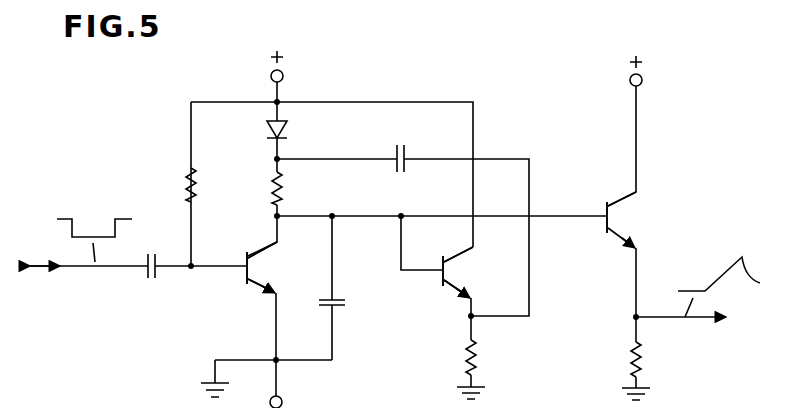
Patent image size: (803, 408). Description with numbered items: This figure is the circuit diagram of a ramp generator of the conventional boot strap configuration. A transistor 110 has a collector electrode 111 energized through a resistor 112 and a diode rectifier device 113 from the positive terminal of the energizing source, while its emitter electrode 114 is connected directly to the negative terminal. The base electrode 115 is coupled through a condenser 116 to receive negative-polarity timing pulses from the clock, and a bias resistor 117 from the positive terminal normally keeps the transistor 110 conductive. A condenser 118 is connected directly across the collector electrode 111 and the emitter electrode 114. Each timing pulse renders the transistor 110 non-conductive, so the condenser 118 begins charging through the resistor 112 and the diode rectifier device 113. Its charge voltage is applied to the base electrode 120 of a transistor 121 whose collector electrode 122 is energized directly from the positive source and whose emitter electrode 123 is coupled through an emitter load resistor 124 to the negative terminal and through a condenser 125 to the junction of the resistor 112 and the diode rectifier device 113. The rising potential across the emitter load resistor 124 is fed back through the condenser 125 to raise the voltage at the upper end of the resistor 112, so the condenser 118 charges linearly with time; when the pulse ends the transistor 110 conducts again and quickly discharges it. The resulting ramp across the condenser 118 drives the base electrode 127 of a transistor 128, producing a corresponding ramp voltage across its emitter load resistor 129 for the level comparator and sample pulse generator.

The transistor 110 is at (236, 300).
The collector electrode 111 is at (258, 250).
The resistor 112 is at (288, 179).
The diode rectifier device 113 is at (265, 126).
The emitter electrode 114 is at (261, 287).
The base electrode 115 is at (243, 276).
The condenser 116 is at (145, 275).
The resistor 117 is at (187, 176).
The condenser 118 is at (340, 298).
The base electrode 120 is at (440, 278).
The transistor 121 is at (417, 258).
The collector electrode 122 is at (462, 252).
The emitter electrode 123 is at (451, 289).
The emitter load resistor 124 is at (480, 352).
The condenser 125 is at (393, 155).
The base electrode 127 is at (605, 210).
The transistor 128 is at (628, 223).
The emitter load resistor 129 is at (648, 355).